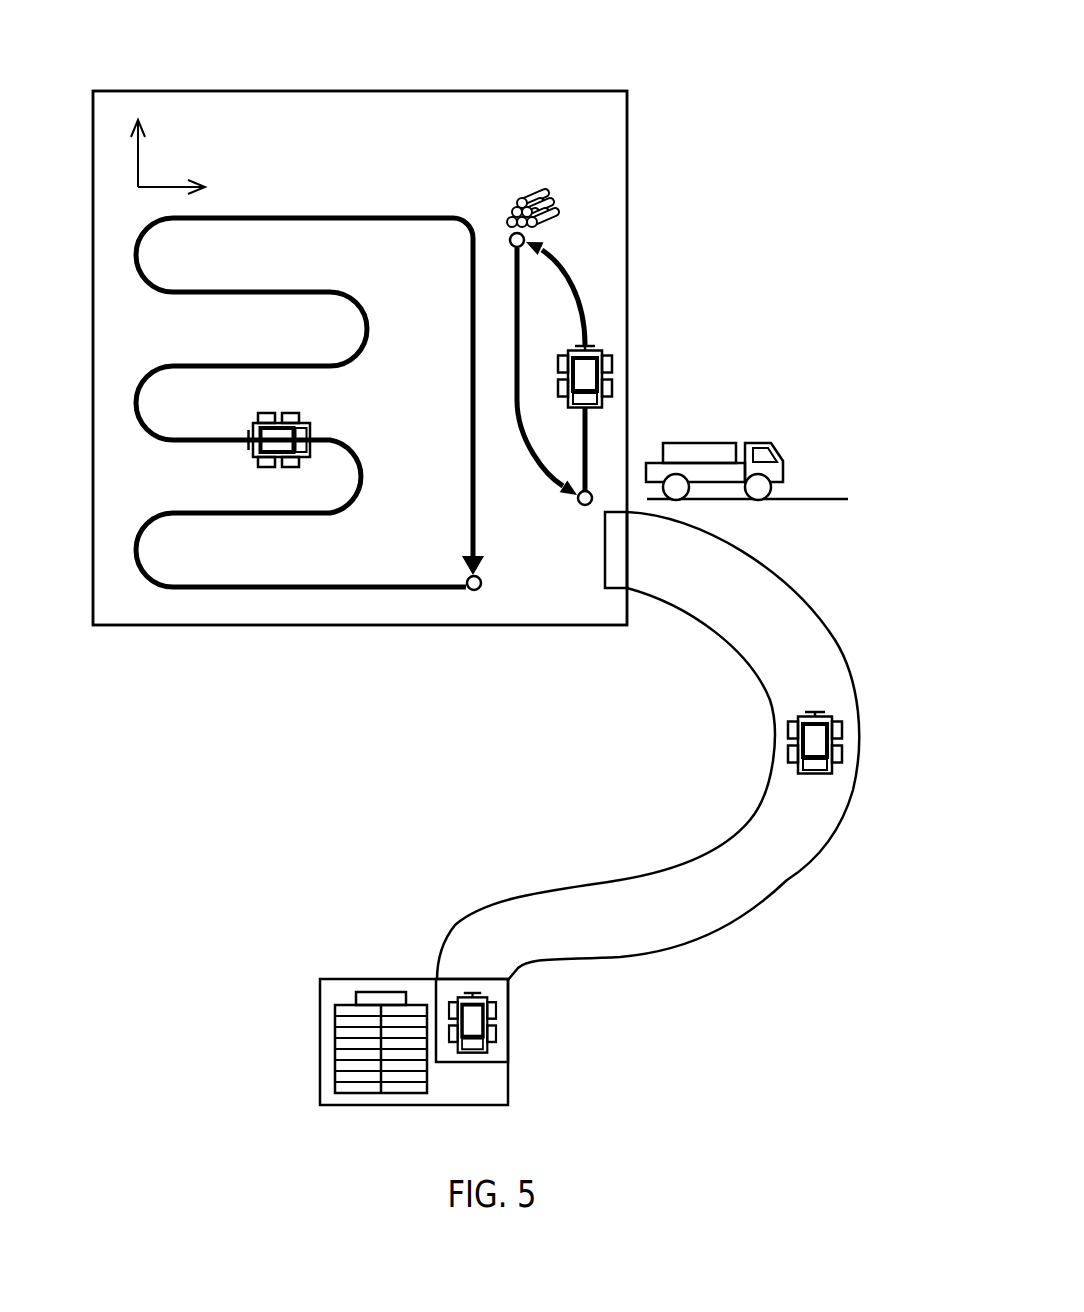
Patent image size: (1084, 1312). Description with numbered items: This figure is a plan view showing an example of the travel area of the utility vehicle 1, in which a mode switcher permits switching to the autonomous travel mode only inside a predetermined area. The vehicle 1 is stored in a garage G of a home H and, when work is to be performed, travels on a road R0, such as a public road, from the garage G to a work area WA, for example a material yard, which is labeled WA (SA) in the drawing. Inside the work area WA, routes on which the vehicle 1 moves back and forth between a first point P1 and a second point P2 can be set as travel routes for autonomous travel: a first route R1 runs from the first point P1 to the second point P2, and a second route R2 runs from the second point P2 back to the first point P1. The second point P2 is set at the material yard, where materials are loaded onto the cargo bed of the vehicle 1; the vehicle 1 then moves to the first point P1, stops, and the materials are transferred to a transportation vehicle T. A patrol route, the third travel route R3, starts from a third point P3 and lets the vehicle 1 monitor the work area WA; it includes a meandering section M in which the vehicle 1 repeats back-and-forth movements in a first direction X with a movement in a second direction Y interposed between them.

The vehicle 1 is at (306, 422).
The work area WA is at (360, 320).
The specified area SA is at (362, 90).
The first direction X is at (185, 188).
The second direction Y is at (131, 142).
The meandering section M is at (162, 352).
The third travel route R3 is at (297, 402).
The first route R1 is at (568, 258).
The second route R2 is at (541, 486).
The road R0 is at (830, 625).
The first point P1 is at (580, 510).
The second point P2 is at (510, 234).
The third point P3 is at (481, 590).
The transportation vehicle T is at (785, 455).
The home H is at (334, 1064).
The garage G is at (508, 1048).